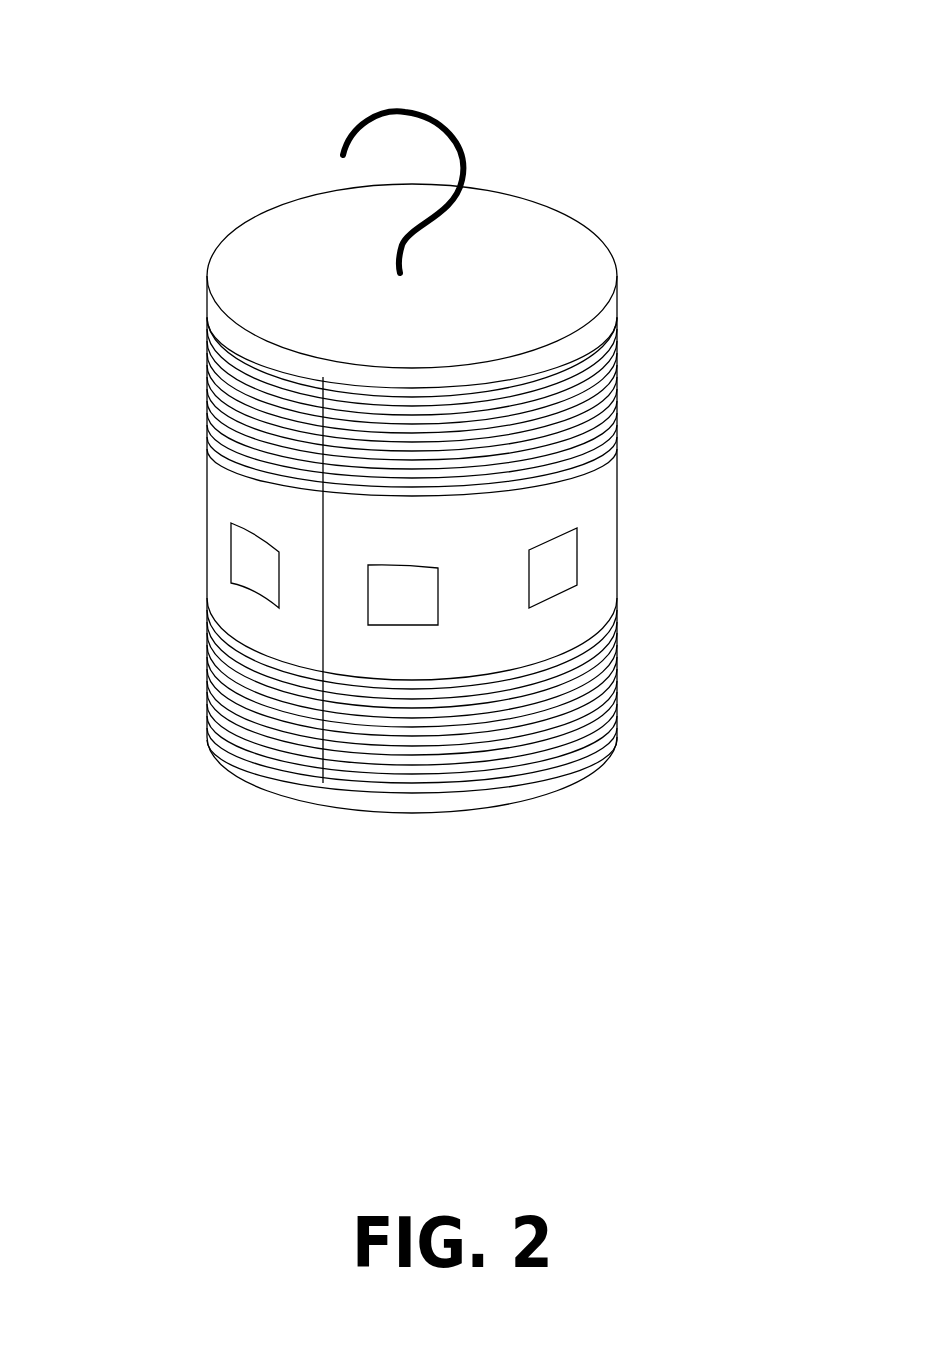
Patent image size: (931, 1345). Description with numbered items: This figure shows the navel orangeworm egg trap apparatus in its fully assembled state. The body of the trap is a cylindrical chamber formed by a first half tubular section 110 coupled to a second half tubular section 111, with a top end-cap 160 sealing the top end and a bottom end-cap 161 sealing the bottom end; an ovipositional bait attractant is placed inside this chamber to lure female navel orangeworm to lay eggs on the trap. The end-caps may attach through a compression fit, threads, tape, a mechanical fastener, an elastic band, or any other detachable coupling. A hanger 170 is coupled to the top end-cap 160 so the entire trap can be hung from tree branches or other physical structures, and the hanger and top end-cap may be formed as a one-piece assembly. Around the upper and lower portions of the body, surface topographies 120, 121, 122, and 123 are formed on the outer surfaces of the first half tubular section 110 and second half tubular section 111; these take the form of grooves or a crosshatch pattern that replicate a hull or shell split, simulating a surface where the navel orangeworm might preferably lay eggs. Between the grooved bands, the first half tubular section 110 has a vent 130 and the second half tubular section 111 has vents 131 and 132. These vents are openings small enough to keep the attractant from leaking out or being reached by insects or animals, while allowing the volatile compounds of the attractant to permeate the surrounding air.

The first half tubular section 110 is at (205, 332).
The second half tubular section 111 is at (617, 323).
The surface topography 120 is at (250, 408).
The surface topography 121 is at (290, 702).
The surface topography 122 is at (550, 413).
The surface topography 123 is at (520, 720).
The vent 130 is at (247, 575).
The vent 131 is at (407, 602).
The vent 132 is at (548, 566).
The top end-cap 160 is at (360, 282).
The bottom end-cap 161 is at (439, 814).
The hanger 170 is at (445, 120).